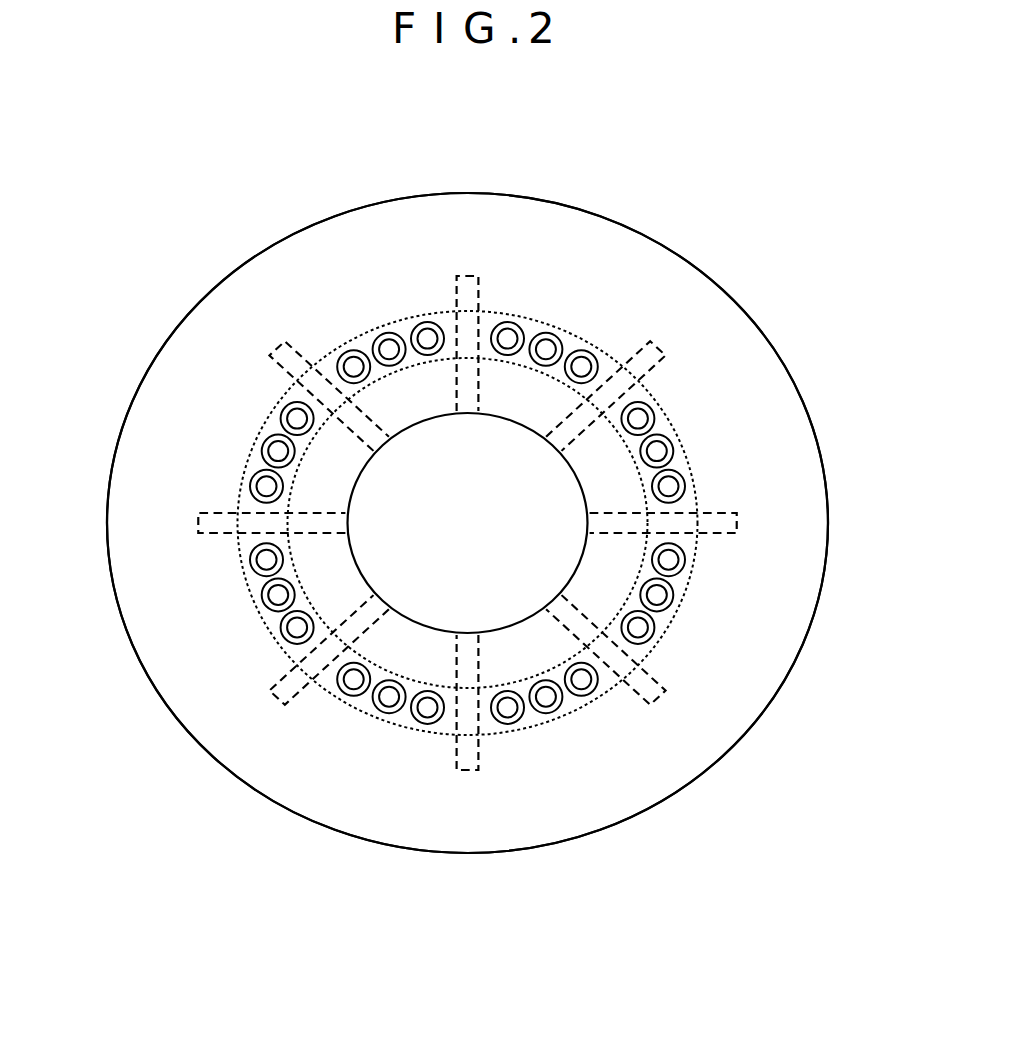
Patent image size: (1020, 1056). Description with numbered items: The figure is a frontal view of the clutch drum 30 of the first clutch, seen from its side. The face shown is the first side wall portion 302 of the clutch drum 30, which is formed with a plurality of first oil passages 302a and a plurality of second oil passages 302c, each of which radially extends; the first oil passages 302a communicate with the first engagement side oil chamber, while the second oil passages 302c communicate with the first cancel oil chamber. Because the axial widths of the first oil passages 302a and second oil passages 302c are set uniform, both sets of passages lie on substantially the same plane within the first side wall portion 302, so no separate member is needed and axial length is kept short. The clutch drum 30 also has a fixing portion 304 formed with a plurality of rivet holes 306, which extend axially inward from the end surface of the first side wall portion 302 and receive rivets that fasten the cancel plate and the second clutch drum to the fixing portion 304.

The clutch drum 30 is at (528, 189).
The first side wall portion 302 is at (653, 287).
The first oil passage 302a is at (462, 276).
The second oil passage 302c is at (275, 348).
The fixing portion 304 is at (400, 727).
The rivet hole 306 is at (288, 418).